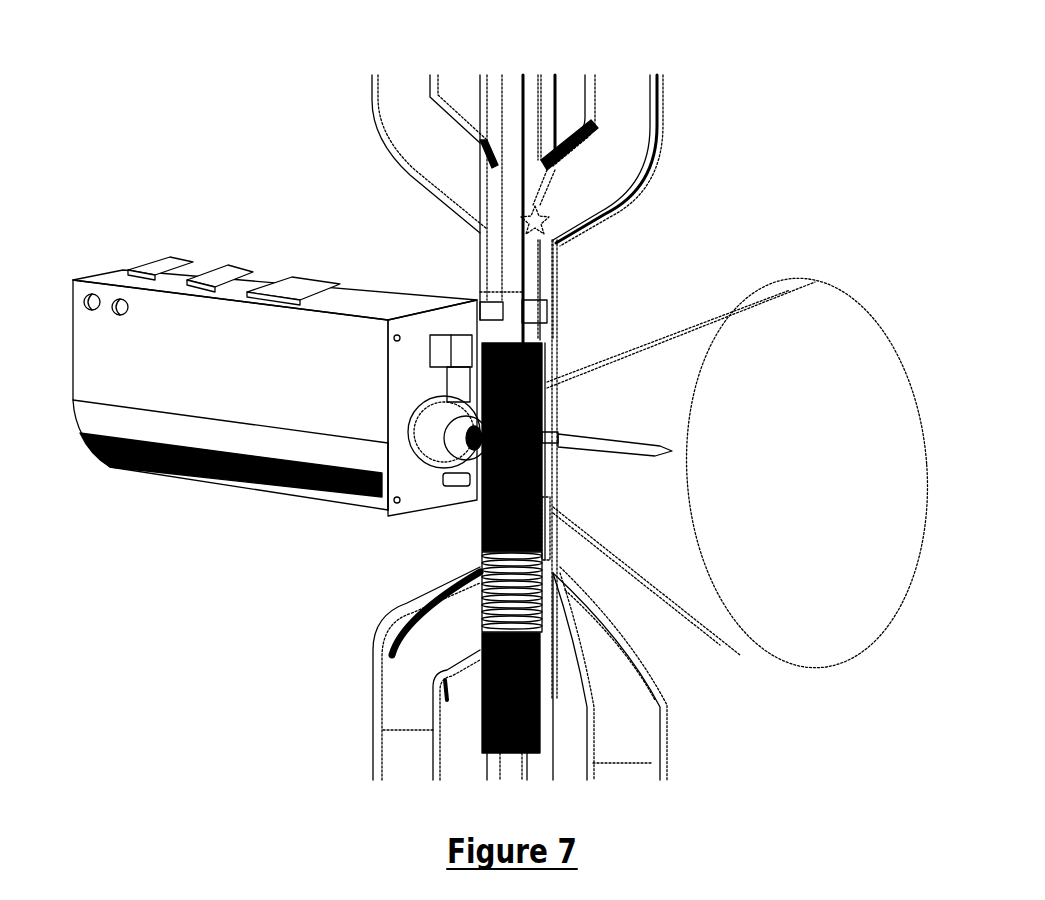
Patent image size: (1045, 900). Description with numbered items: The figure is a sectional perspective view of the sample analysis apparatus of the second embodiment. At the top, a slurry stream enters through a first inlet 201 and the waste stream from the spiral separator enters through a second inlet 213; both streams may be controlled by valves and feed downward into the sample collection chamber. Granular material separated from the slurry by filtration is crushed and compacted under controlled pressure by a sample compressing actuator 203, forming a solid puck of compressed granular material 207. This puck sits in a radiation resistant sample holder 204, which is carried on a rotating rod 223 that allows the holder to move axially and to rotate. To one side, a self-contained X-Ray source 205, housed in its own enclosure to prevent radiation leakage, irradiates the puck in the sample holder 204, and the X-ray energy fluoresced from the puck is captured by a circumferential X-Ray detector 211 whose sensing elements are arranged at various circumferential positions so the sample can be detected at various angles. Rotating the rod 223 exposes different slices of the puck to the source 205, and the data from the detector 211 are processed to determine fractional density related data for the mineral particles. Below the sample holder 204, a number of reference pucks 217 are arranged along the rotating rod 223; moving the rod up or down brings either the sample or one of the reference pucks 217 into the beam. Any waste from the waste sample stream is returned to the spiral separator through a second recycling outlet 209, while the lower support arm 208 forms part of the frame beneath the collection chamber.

The first inlet 201 is at (407, 100).
The sample compressing actuator 203 is at (512, 277).
The sample holder 204 is at (553, 478).
The X-Ray source 205 is at (198, 293).
The compressed granular material 207 is at (545, 360).
The lower left support arm 208 is at (400, 688).
The second recycling outlet 209 is at (633, 778).
The circumferential X-Ray detector 211 is at (590, 437).
The second inlet 213 is at (633, 110).
The reference pucks 217 is at (487, 582).
The rotating rod 223 is at (513, 778).